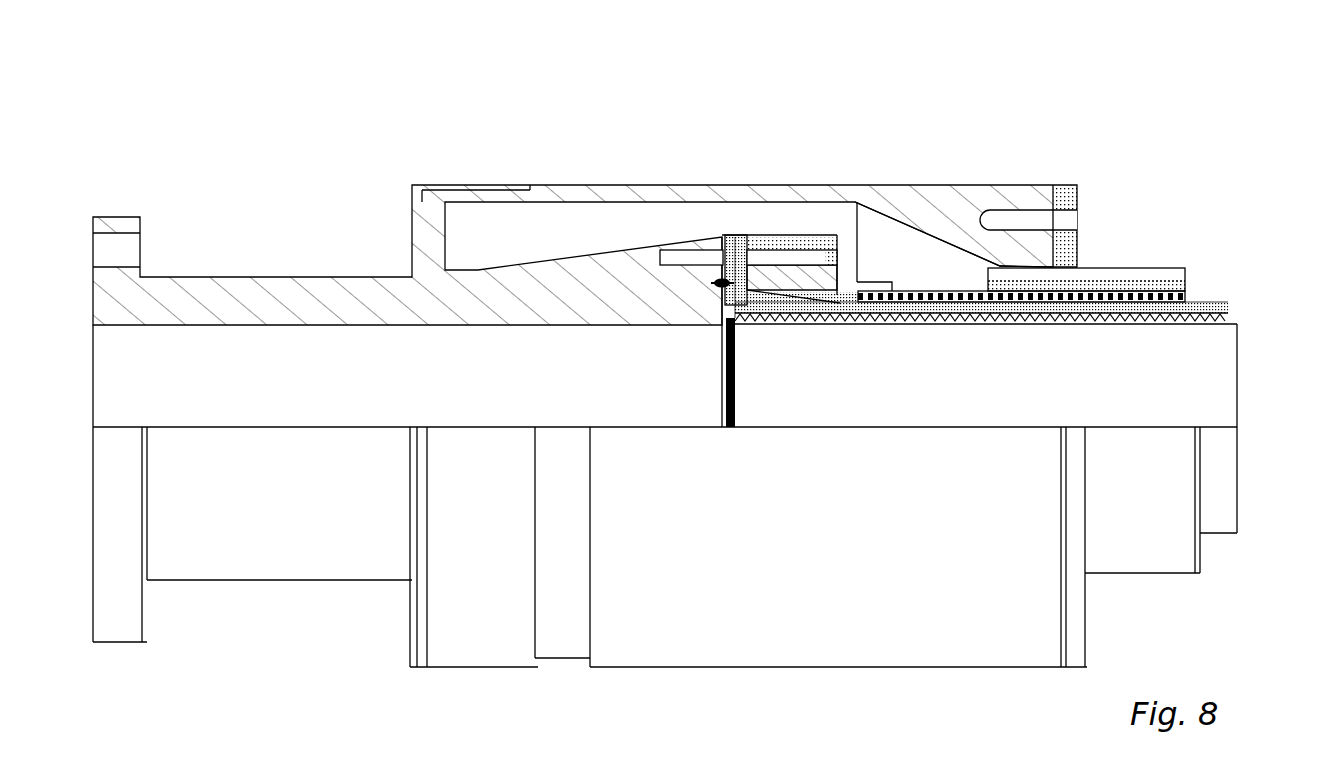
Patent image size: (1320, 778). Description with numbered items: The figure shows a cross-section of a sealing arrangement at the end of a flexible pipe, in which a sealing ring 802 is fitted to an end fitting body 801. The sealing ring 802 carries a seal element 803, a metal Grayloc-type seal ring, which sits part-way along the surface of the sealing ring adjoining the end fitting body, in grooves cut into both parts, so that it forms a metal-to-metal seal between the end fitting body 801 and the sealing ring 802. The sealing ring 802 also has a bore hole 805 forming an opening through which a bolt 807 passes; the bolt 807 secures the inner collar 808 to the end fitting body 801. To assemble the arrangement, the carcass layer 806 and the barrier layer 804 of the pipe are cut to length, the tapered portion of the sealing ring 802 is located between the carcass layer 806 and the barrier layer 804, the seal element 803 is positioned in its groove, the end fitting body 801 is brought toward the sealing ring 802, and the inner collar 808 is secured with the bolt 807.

The end fitting body 801 is at (597, 293).
The sealing ring 802 is at (738, 257).
The seal element 803 is at (722, 283).
The barrier layer 804 is at (1182, 298).
The bore hole 805 is at (770, 282).
The carcass layer 806 is at (1226, 315).
The bolt 807 is at (842, 210).
The inner collar 808 is at (806, 257).